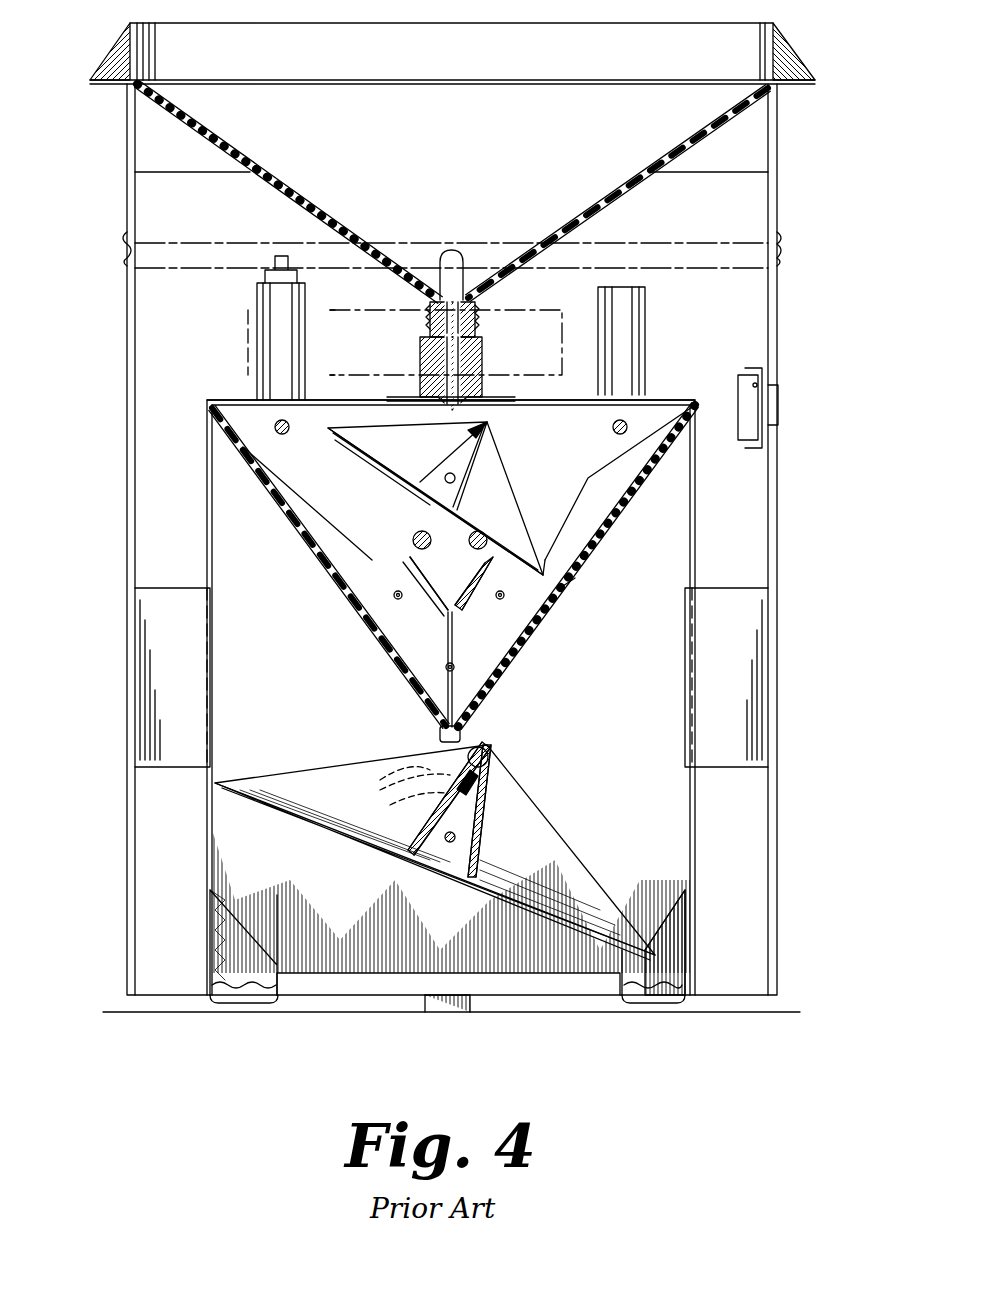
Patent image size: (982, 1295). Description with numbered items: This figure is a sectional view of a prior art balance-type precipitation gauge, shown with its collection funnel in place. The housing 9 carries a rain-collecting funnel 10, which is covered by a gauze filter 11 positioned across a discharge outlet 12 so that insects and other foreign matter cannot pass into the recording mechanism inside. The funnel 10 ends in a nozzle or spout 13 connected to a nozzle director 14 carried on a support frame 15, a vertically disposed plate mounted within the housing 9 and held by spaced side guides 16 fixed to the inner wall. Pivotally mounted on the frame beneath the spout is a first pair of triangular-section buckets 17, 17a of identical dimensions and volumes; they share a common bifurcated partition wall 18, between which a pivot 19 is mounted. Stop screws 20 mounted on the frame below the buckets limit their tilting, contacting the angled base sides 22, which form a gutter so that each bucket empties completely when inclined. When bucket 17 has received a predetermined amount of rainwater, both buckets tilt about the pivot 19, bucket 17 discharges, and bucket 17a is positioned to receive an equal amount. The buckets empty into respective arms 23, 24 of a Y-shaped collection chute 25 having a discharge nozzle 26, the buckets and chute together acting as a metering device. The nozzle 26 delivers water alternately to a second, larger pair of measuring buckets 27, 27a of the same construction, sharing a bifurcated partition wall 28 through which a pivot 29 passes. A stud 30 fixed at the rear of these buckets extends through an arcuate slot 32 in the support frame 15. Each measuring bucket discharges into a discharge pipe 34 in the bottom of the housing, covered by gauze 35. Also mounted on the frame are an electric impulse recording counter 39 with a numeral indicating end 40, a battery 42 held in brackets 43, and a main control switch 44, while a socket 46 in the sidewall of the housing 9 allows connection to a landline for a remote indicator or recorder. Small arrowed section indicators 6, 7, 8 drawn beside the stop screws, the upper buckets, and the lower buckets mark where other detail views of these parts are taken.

The fastener / section indicator 6 is at (524, 460).
The section indicator / V-linkage 7 is at (466, 568).
The section indicator 8 is at (530, 755).
The housing 9 is at (773, 303).
The rain-collecting funnel 10 is at (565, 160).
The gauze filter 11 is at (470, 250).
The discharge outlet 12 is at (468, 292).
The nozzle or spout 13 is at (428, 320).
The nozzle director 14 is at (480, 375).
The support frame 15 is at (598, 405).
The side guides 16 is at (190, 683).
The bucket 17 is at (448, 452).
The bucket 17a is at (510, 494).
The bifurcated partition wall 18 is at (477, 450).
The pivot 19 is at (445, 480).
The stop screws 20 is at (410, 557).
The base sides 22 is at (375, 455).
The arm 23 is at (368, 628).
The arm 24 is at (560, 588).
The Y-shaped collection chute 25 is at (440, 700).
The discharge nozzle 26 is at (462, 738).
The bucket 27 is at (380, 805).
The bucket 27a is at (555, 850).
The bifurcated partition wall 28 is at (498, 800).
The pivot 29 is at (447, 840).
The stud 30 is at (515, 775).
The arcuate slot 32 is at (425, 748).
The discharge pipe 34 is at (258, 985).
The gauze 35 is at (243, 1002).
The electric impulse recording counter 39 is at (335, 375).
The numeral indicating end 40 is at (248, 343).
The battery 42 is at (560, 295).
The brackets 43 is at (280, 393).
The main control switch 44 is at (283, 268).
The socket 46 is at (738, 392).